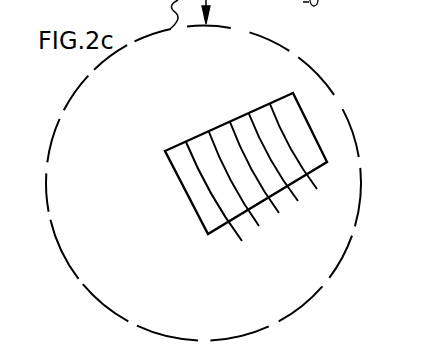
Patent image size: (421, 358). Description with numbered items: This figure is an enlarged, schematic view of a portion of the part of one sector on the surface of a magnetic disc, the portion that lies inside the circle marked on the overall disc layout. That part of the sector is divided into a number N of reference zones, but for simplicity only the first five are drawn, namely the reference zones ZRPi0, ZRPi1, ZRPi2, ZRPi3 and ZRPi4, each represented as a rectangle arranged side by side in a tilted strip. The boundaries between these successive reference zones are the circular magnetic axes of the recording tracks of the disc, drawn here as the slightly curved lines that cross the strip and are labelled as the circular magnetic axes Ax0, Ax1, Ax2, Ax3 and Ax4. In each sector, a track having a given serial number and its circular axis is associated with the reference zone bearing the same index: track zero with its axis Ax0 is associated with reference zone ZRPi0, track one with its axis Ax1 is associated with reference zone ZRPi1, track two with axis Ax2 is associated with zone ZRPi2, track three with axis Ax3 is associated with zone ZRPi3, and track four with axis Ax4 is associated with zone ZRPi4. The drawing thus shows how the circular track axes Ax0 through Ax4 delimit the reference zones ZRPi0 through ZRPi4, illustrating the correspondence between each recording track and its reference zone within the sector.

The reference zone ZRPi0 is at (188, 153).
The reference zone ZRPi1 is at (207, 141).
The reference zone ZRPi2 is at (227, 130).
The reference zone ZRPi3 is at (247, 119).
The reference zone ZRPi4 is at (267, 108).
The circular magnetic axis Ax0 is at (199, 172).
The circular magnetic axis Ax1 is at (218, 159).
The circular magnetic axis Ax2 is at (238, 149).
The circular magnetic axis Ax3 is at (258, 138).
The circular magnetic axis Ax4 is at (278, 127).